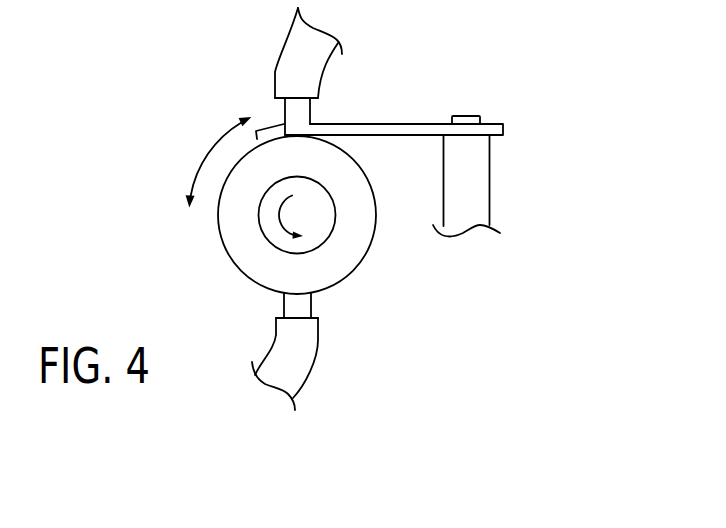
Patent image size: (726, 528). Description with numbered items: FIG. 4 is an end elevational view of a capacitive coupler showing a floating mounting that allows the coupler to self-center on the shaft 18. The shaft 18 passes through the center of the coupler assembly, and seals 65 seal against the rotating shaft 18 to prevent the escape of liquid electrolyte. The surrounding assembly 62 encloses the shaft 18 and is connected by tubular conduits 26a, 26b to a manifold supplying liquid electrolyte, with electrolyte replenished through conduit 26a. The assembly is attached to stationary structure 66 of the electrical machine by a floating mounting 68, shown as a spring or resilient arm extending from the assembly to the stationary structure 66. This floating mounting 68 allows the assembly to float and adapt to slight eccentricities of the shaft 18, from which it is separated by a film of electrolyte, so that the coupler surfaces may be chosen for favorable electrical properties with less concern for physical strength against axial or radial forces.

The shaft 18 is at (315, 227).
The tubular conduit 26a is at (295, 58).
The tubular conduit 26b is at (304, 360).
The roller 62 is at (242, 271).
The seals 65 is at (261, 229).
The stationary structure 66 is at (481, 175).
The floating mounting 68 is at (400, 124).